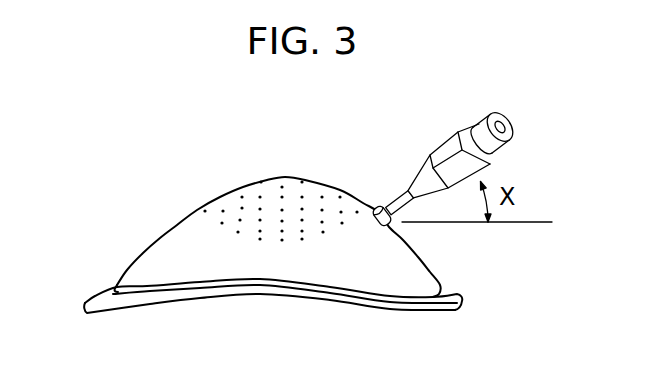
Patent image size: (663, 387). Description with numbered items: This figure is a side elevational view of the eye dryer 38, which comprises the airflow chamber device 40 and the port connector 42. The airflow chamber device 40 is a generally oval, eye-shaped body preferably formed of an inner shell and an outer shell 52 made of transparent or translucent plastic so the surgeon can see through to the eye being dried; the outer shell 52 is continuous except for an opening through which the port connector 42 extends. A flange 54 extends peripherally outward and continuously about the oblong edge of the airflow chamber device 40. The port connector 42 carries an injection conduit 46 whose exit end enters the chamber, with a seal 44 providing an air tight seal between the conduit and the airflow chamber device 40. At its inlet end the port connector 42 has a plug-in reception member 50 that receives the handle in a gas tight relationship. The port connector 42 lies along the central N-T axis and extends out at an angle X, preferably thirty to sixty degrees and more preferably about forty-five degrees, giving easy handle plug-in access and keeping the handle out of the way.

The eye dryer 38 is at (112, 213).
The airflow chamber device 40 is at (194, 228).
The port connector 42 is at (437, 134).
The seal 44 is at (377, 208).
The injection conduit 46 is at (404, 193).
The plug-in reception member 50 is at (479, 131).
The outer shell 52 is at (158, 249).
The flange 54 is at (178, 295).